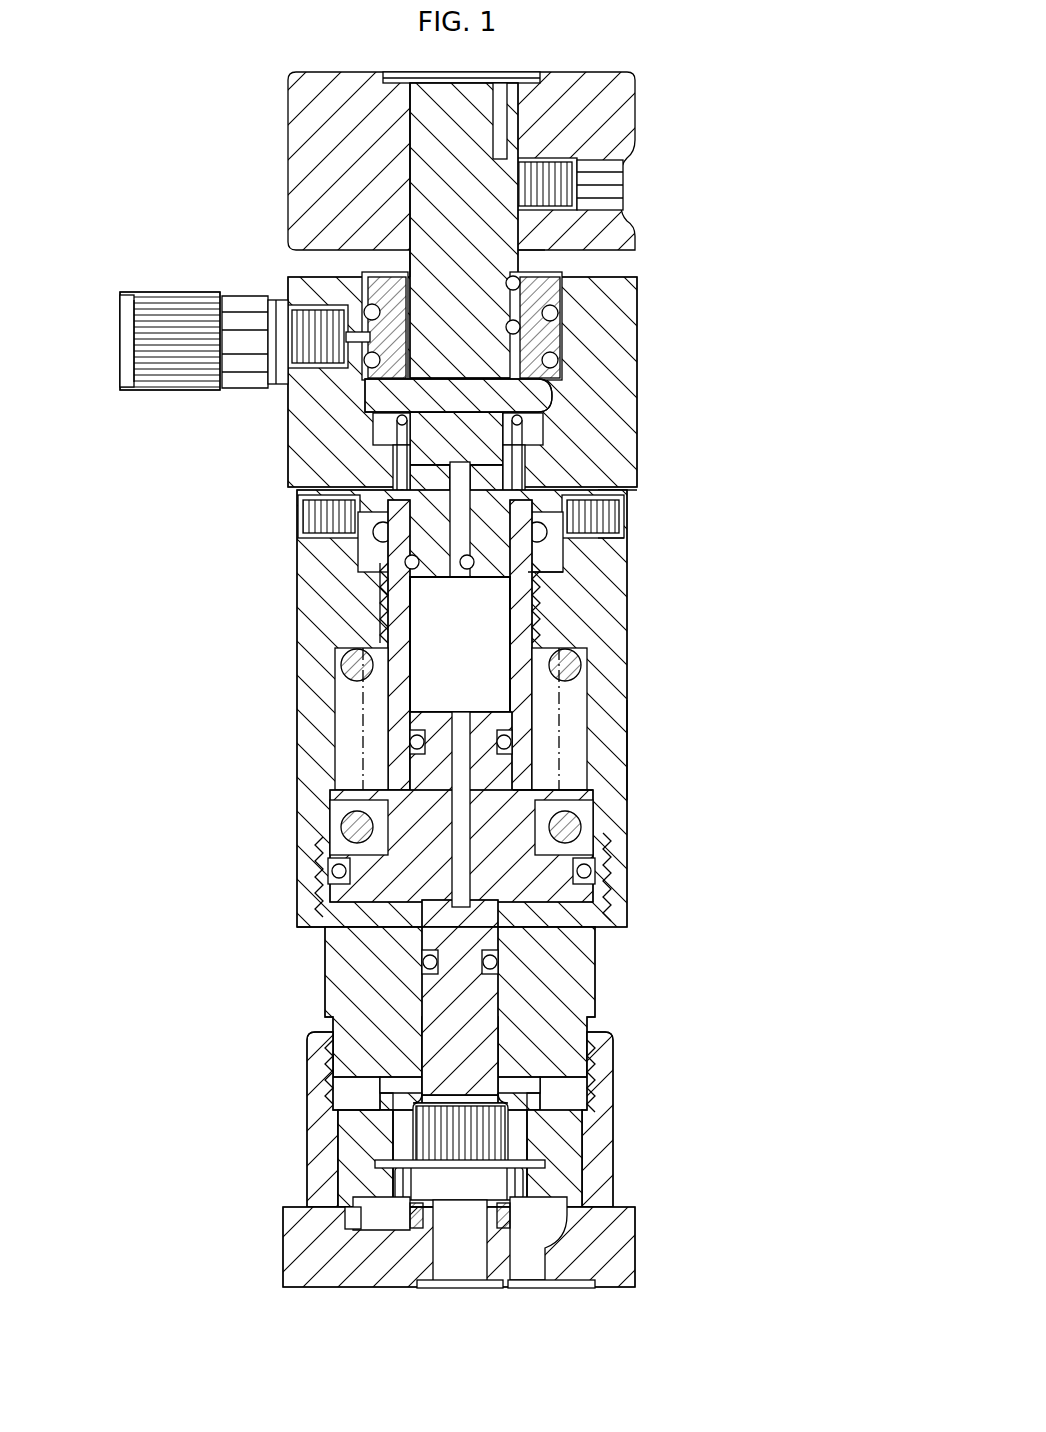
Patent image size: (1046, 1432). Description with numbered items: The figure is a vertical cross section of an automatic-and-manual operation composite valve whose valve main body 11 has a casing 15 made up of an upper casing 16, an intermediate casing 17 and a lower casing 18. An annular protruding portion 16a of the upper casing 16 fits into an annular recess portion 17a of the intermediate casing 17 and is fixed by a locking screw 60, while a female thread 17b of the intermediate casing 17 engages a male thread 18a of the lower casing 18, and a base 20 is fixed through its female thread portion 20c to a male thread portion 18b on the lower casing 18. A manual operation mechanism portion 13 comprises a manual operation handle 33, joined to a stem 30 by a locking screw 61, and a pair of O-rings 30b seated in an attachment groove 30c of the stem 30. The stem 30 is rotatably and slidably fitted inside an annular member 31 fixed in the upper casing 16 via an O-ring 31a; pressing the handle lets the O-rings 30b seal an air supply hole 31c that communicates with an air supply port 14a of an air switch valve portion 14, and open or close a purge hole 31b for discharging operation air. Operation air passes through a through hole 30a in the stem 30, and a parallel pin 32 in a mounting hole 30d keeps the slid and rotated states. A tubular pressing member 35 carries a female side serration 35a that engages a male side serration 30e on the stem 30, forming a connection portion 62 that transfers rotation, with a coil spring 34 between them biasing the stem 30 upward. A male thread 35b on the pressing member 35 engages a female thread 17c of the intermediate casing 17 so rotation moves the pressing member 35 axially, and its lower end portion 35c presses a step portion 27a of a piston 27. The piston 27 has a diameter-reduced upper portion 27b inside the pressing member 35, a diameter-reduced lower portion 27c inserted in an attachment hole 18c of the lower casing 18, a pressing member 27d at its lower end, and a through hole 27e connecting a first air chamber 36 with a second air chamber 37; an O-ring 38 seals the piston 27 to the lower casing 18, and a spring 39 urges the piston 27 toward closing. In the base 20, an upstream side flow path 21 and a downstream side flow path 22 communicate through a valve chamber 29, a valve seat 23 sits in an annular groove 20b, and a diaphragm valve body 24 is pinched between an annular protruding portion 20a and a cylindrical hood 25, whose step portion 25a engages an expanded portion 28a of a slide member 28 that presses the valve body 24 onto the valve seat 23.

The valve main body 11 is at (655, 651).
The manual operation mechanism portion 13 is at (403, 240).
The air switch valve portion 14 is at (366, 300).
The air supply port 14a is at (350, 340).
The casing 15 is at (636, 750).
The upper casing 16 is at (622, 390).
The annular protruding portion 16a is at (620, 506).
The intermediate casing 17 is at (300, 720).
The annular recess portion 17a is at (372, 530).
The female thread 17b is at (608, 880).
The female thread 17c is at (378, 634).
The lower casing 18 is at (345, 978).
The male thread 18a is at (322, 880).
The male thread portion 18b is at (616, 1072).
The attachment hole 18c is at (494, 1040).
The base 20 is at (600, 1173).
The annular protruding portion 20a is at (630, 1232).
The annular groove 20b is at (413, 1235).
The female thread portion 20c is at (325, 1062).
The upstream side flow path 21 is at (460, 1262).
The downstream side flow path 22 is at (548, 1262).
The valve seat 23 is at (512, 1240).
The valve body 24 is at (380, 1182).
The cylindrical hood 25 is at (572, 1142).
The step portion 25a is at (360, 1145).
The piston 27 is at (490, 1010).
The step portion 27a is at (545, 800).
The diameter-reduced upper portion 27b is at (422, 768).
The diameter-reduced lower portion 27c is at (440, 1028).
The pressing member 27d is at (480, 1090).
The through hole 27e is at (466, 858).
The slide member 28 is at (445, 1127).
The expanded portion 28a is at (510, 1182).
The valve chamber 29 is at (362, 1223).
The stem 30 is at (428, 108).
The through hole 30a is at (556, 573).
The O-rings 30b is at (385, 268).
The attachment groove 30c is at (540, 262).
The mounting hole 30d is at (378, 415).
The male side serration 30e is at (562, 565).
The annular member 31 is at (556, 295).
The O-ring 31a is at (558, 314).
The purge hole 31b is at (558, 354).
The air supply hole 31c is at (392, 286).
The parallel pin 32 is at (522, 405).
The manual operation handle 33 is at (630, 96).
The coil spring 34 is at (614, 476).
The tubular pressing member 35 is at (352, 668).
The female side serration 35a is at (385, 592).
The male thread 35b is at (538, 606).
The lower end portion 35c is at (386, 800).
The first air chamber 36 is at (478, 686).
The second air chamber 37 is at (330, 927).
The O-ring 38 is at (498, 965).
The spring 39 is at (352, 830).
The locking screw 60 is at (322, 510).
The locking screw 61 is at (596, 182).
The connection portion 62 is at (622, 538).